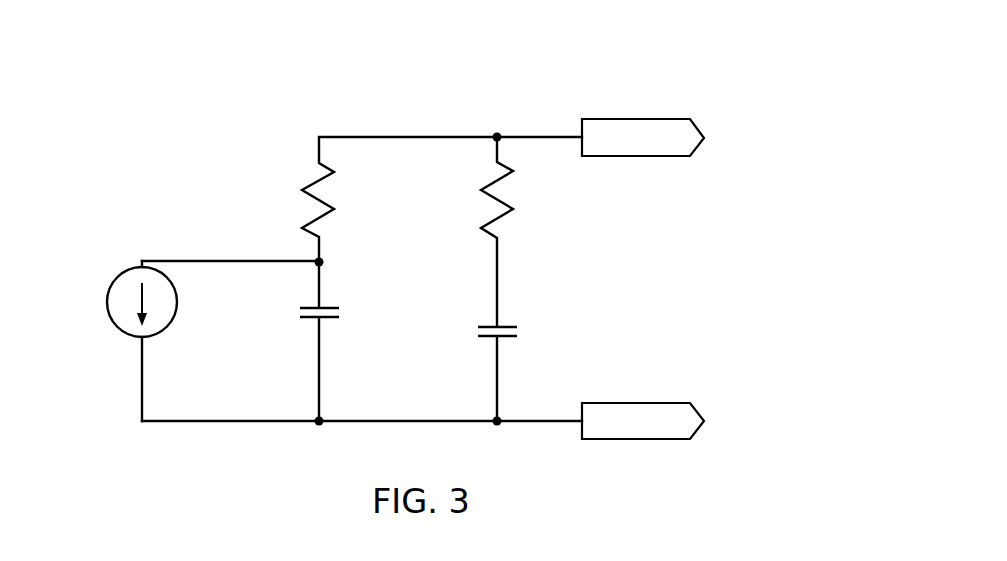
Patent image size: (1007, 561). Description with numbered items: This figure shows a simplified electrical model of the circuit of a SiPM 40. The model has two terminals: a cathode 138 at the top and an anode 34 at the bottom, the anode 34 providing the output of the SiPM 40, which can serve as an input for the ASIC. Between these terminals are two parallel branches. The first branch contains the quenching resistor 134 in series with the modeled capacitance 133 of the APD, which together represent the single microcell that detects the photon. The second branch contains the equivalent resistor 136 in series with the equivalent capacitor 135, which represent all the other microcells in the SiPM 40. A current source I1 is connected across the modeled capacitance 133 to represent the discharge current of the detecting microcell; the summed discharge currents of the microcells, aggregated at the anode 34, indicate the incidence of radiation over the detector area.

The SiPM 40 is at (630, 73).
The R1 134 is at (318, 180).
The C1 133 is at (308, 327).
The R2 136 is at (490, 200).
The C2 135 is at (488, 340).
The common cathode 138 is at (637, 157).
The anode 34 is at (636, 402).
The current source I1 is at (150, 285).